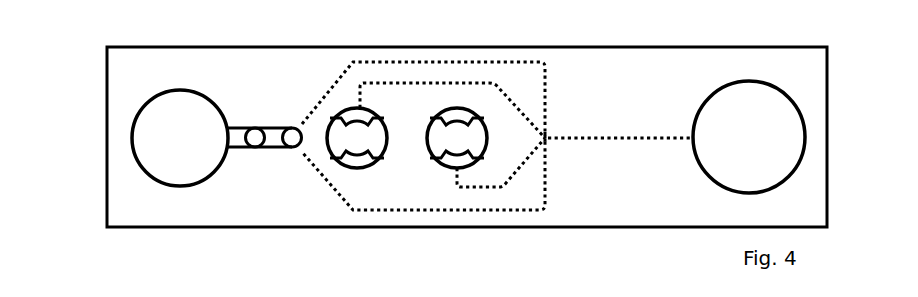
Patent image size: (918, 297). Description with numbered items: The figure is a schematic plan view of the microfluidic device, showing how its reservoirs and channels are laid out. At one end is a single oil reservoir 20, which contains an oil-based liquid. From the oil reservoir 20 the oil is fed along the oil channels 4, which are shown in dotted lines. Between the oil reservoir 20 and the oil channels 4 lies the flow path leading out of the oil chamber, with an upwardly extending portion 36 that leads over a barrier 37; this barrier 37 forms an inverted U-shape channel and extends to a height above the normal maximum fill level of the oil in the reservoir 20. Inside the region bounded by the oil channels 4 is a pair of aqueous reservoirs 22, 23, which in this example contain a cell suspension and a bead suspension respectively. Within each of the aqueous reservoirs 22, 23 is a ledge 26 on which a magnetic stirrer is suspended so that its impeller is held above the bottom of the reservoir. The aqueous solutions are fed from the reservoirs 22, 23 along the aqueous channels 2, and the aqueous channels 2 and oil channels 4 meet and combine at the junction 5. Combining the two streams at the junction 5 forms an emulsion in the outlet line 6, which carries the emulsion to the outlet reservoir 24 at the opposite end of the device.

The aqueous channels 2 is at (503, 97).
The oil channels 4 is at (547, 85).
The junction 5 is at (546, 137).
The outlet line 6 is at (618, 137).
The oil reservoir 20 is at (168, 140).
The aqueous reservoir 22 is at (355, 138).
The aqueous reservoir 23 is at (457, 143).
The outlet reservoir 24 is at (750, 133).
The ledge 26 is at (368, 158).
The upwardly extending portion 36 is at (254, 139).
The barrier 37 is at (275, 138).